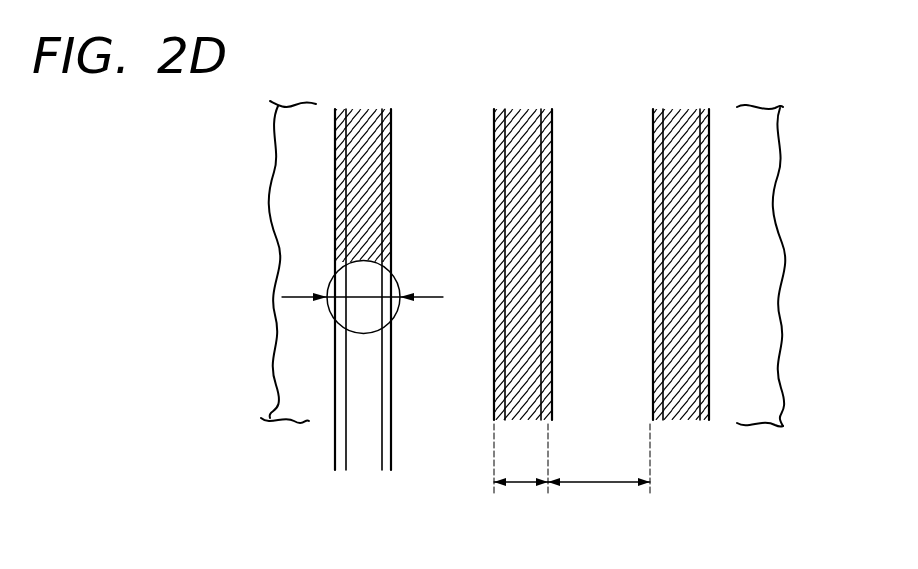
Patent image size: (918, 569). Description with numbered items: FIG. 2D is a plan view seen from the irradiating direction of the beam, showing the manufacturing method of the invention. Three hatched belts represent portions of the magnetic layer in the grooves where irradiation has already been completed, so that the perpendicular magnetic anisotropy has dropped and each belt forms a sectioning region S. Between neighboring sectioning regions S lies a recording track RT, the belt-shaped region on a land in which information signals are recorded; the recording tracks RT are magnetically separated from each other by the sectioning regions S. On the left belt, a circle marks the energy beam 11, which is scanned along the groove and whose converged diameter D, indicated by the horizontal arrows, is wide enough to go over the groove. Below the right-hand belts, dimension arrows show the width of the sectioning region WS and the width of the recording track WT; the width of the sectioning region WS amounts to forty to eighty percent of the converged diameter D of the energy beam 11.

The energy beam 11 is at (360, 322).
The sectioning region S is at (363, 118).
The recording track RT is at (436, 118).
The converged diameter D is at (362, 286).
The width of the sectioning region WS is at (520, 486).
The width of the recording track WT is at (608, 486).